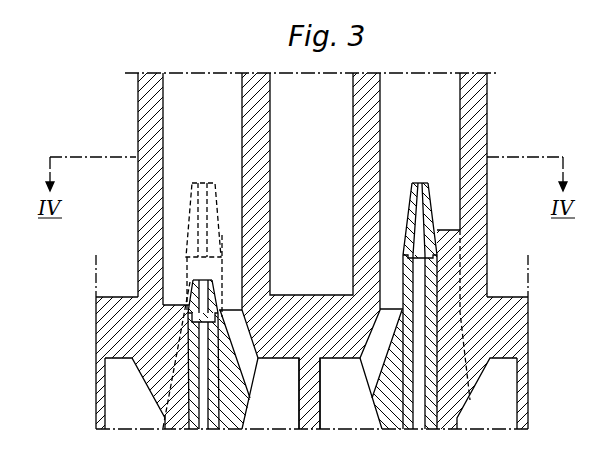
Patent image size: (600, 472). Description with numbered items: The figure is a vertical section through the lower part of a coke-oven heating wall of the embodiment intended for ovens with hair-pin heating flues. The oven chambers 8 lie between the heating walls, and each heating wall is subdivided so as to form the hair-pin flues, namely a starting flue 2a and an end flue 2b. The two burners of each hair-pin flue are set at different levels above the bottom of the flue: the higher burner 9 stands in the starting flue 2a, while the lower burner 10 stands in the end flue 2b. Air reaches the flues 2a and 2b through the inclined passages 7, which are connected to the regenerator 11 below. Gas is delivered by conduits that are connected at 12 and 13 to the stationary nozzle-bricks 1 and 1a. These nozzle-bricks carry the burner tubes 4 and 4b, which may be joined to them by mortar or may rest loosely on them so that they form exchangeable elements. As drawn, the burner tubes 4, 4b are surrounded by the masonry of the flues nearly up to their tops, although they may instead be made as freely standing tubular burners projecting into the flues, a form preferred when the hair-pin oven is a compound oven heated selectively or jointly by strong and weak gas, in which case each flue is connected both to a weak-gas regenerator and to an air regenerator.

The nozzle-brick 1 is at (442, 415).
The nozzle-brick 1a is at (168, 427).
The starting flue 2a is at (433, 191).
The end flue 2b is at (190, 191).
The burner tube 4 is at (437, 220).
The burner tube 4b is at (188, 307).
The passage 7 is at (311, 354).
The oven chamber 8 is at (311, 251).
The higher burner 9 is at (420, 183).
The lower burner 10 is at (193, 280).
The regenerator 11 is at (311, 393).
The gas conduit connection 12 is at (420, 418).
The gas conduit connection 13 is at (208, 429).